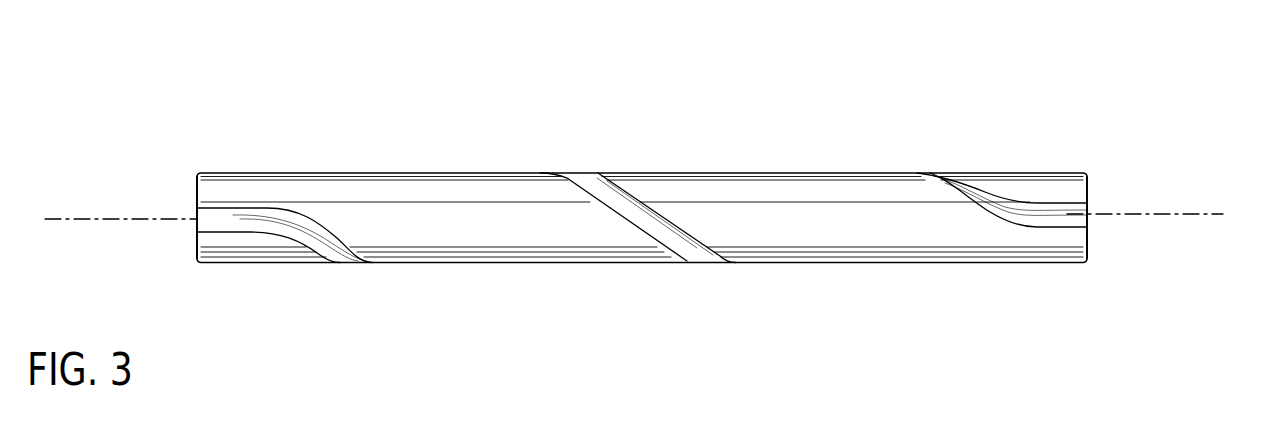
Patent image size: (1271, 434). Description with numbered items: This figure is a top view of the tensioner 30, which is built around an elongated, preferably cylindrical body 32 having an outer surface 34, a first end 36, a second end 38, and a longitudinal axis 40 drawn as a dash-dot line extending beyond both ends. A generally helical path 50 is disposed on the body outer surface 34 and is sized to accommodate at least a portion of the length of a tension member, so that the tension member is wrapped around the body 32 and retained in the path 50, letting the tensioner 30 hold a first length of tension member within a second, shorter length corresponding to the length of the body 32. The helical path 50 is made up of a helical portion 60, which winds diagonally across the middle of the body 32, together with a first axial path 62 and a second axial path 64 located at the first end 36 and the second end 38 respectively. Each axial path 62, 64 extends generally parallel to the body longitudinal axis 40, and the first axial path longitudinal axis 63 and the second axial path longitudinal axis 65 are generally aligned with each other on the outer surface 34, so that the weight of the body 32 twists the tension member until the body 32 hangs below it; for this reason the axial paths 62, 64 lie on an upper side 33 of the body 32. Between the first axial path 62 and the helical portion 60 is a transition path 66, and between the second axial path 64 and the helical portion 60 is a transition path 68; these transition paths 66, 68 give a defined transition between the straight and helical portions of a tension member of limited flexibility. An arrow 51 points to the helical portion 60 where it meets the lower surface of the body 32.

The tensioner 30 is at (165, 125).
The elongated body 32 is at (402, 210).
The upper side 33 is at (502, 210).
The outer surface 34 is at (795, 185).
The first end 36 is at (197, 247).
The second end 38 is at (1087, 247).
The longitudinal axis 40 is at (92, 219).
The helical path 50 is at (673, 240).
The groove direction 51 is at (725, 278).
The helical portion 60 is at (630, 201).
The first axial path 62 is at (227, 207).
The first axial path longitudinal axis 63 is at (170, 218).
The second axial path 64 is at (1050, 205).
The second axial path longitudinal axis 65 is at (1098, 213).
The first transition path 66 is at (308, 243).
The second transition path 68 is at (990, 207).